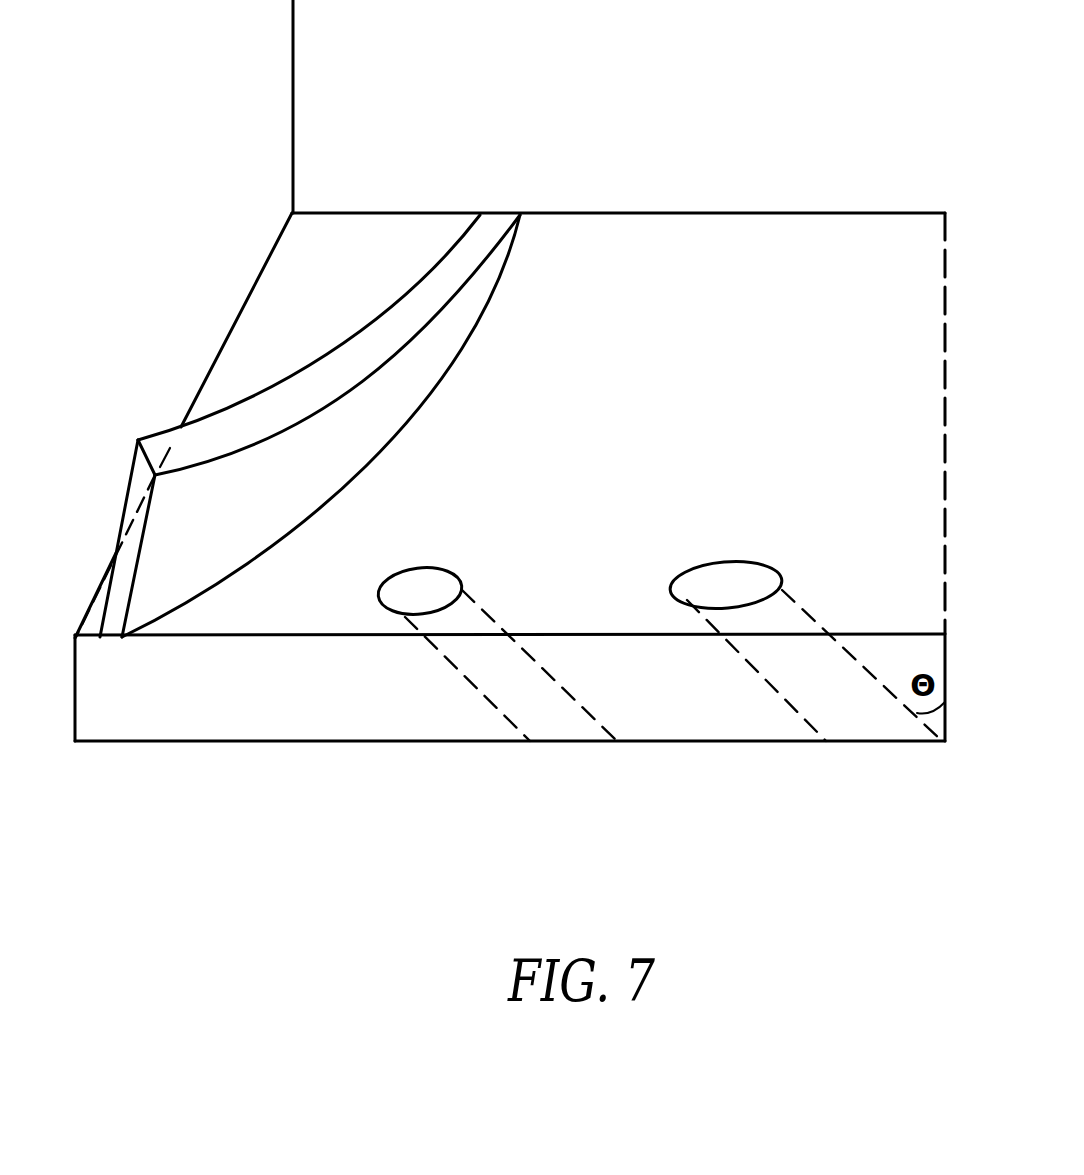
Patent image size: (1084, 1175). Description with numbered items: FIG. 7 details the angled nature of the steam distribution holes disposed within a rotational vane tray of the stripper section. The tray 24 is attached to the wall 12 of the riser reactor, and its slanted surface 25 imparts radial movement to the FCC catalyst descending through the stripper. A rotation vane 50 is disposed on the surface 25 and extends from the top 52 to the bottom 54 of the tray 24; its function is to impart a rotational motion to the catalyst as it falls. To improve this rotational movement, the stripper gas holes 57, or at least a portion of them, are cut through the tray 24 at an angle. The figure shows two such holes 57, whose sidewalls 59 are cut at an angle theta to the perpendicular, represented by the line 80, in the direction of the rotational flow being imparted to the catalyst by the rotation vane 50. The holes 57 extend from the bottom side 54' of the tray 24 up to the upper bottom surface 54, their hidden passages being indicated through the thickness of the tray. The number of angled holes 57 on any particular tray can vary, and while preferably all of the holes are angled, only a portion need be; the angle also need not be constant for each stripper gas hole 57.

The wall 12 is at (293, 53).
The top 52 is at (667, 213).
The tray 24 is at (752, 367).
The surface 25 is at (298, 273).
The rotation vane 50 is at (226, 519).
The bottom 54 is at (510, 687).
The bottom side 54' is at (510, 767).
The stripper gas holes 57 is at (423, 568).
The sidewalls 59 is at (581, 707).
The line 80 is at (944, 540).